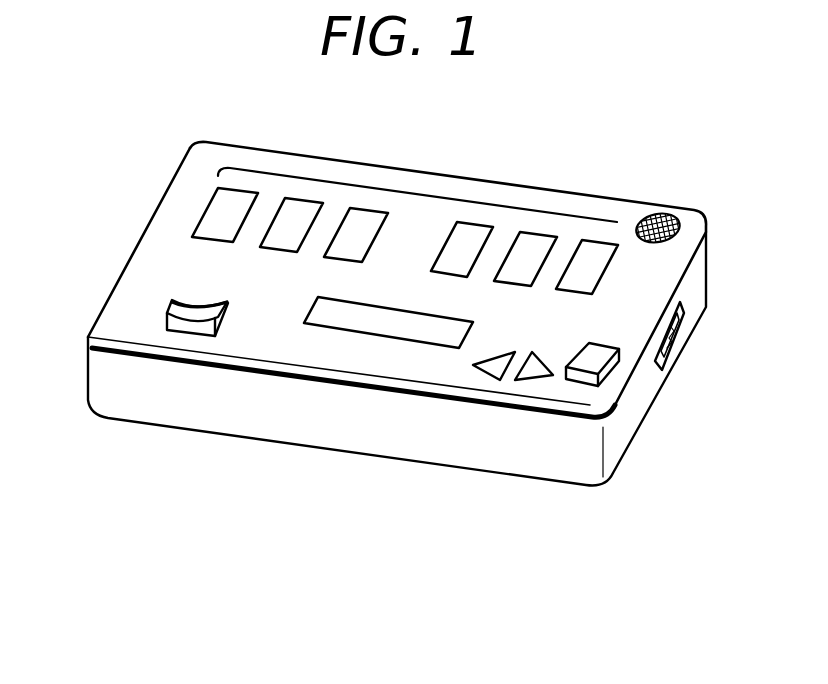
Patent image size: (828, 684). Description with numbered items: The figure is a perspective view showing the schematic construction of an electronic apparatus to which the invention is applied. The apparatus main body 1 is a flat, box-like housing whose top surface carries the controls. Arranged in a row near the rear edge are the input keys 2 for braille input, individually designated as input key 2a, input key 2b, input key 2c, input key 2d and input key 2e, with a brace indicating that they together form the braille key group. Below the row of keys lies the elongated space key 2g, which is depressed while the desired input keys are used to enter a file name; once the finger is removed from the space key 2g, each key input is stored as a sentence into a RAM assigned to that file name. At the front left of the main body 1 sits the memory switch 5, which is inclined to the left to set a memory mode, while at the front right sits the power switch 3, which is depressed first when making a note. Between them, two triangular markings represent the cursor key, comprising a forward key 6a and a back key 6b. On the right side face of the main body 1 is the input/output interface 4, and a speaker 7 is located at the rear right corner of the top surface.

The apparatus main body 1 is at (623, 199).
The input keys 2 is at (422, 195).
The input key 2a is at (215, 231).
The input key 2b is at (282, 240).
The input key 2c is at (343, 252).
The input key 2d is at (455, 263).
The input key 2e is at (517, 277).
The space key 2g is at (347, 322).
The power switch 3 is at (613, 368).
The input/output interface 4 is at (678, 335).
The memory switch 5 is at (170, 301).
The forward key 6a is at (483, 369).
The back key 6b is at (537, 371).
The speaker 7 is at (683, 221).